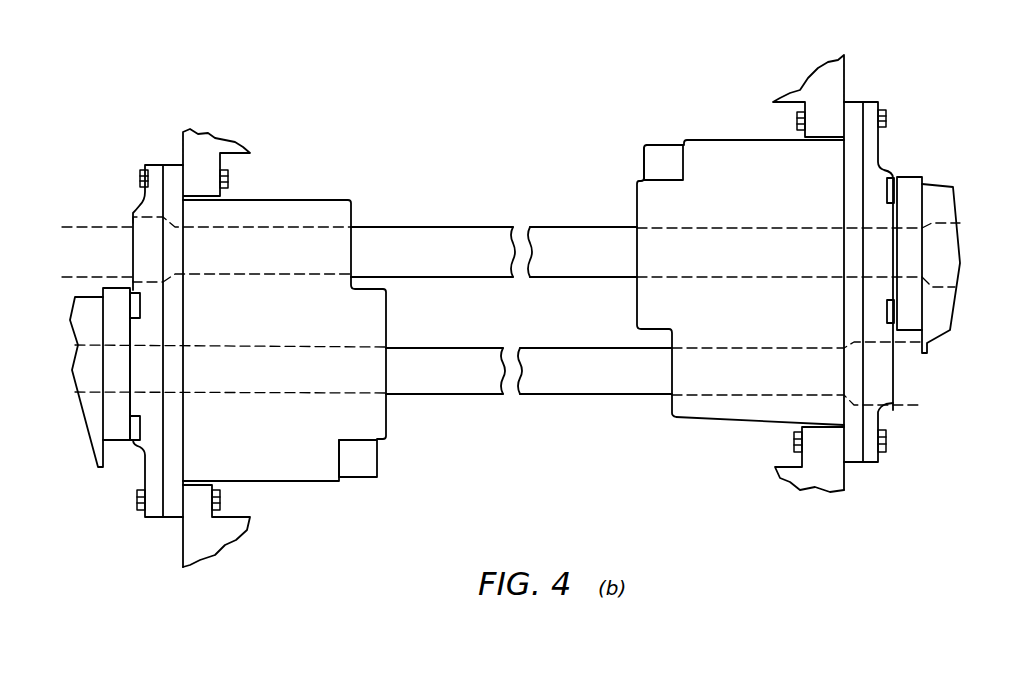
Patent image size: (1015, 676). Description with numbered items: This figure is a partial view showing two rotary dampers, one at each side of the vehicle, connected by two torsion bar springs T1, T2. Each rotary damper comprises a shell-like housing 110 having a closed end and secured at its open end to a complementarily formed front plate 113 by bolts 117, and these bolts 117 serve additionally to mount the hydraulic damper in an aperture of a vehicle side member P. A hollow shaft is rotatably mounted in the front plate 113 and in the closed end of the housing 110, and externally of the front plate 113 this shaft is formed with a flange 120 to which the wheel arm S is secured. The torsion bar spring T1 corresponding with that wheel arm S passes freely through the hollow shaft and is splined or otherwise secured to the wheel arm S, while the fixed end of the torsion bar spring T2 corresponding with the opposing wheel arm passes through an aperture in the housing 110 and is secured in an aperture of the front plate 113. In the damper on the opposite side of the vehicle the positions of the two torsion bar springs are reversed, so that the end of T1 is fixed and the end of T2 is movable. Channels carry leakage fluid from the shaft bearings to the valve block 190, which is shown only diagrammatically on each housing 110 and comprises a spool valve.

The housing 110 is at (256, 200).
The front plate 113 is at (133, 213).
The bolts 117 is at (220, 498).
The flange 120 is at (120, 288).
The valve block 190 is at (367, 457).
The vehicle side member P is at (190, 134).
The wheel arm S is at (63, 340).
The torsion bar spring T1 is at (403, 227).
The torsion bar spring T2 is at (563, 397).